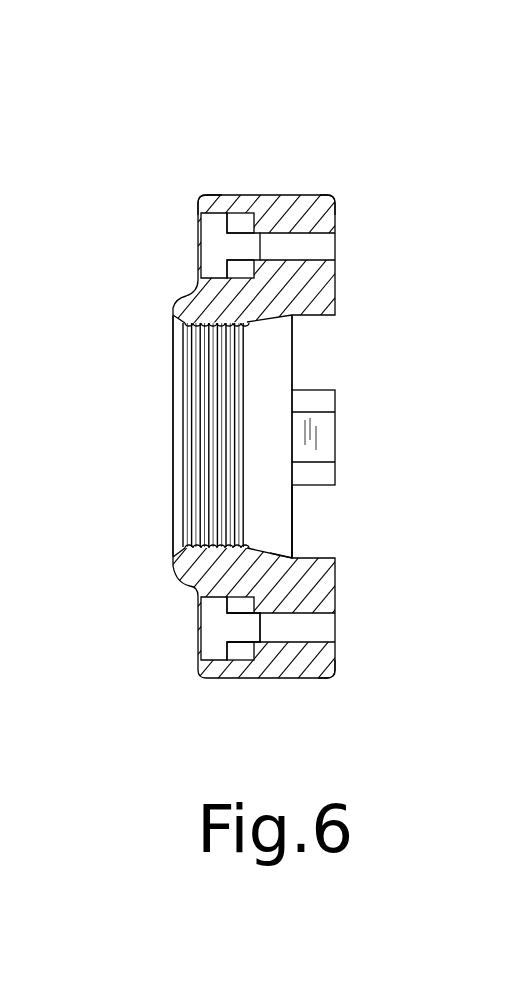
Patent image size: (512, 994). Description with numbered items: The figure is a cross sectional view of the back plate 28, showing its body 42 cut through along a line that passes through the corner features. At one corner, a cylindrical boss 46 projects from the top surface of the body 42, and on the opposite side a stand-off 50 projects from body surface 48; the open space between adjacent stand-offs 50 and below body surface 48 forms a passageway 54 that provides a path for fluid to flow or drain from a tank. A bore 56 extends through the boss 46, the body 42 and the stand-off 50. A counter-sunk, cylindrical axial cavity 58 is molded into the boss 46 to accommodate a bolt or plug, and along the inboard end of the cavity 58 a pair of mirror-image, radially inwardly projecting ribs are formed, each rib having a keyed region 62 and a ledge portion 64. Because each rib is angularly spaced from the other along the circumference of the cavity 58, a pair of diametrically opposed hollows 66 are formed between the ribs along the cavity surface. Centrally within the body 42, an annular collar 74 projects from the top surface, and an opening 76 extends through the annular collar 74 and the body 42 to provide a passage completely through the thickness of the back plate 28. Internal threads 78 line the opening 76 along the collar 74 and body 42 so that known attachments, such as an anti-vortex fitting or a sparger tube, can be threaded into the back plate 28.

The back plate 28 is at (322, 118).
The body 42 is at (281, 203).
The cylindrical boss 46 is at (208, 200).
The body surface 48 is at (293, 549).
The stand-offs 50 is at (330, 193).
The passageways 54 is at (313, 335).
The bore 56 is at (323, 622).
The cavity 58 is at (192, 252).
The keyed region 62 is at (220, 605).
The ledge portion 64 is at (242, 612).
The hollows 66 is at (243, 248).
The annular collar 74 is at (177, 310).
The opening 76 is at (146, 433).
The internal threads 78 is at (203, 387).